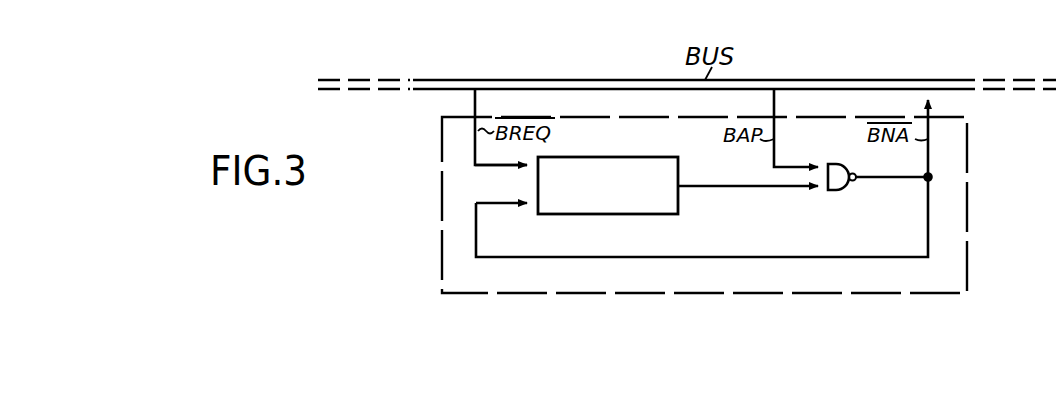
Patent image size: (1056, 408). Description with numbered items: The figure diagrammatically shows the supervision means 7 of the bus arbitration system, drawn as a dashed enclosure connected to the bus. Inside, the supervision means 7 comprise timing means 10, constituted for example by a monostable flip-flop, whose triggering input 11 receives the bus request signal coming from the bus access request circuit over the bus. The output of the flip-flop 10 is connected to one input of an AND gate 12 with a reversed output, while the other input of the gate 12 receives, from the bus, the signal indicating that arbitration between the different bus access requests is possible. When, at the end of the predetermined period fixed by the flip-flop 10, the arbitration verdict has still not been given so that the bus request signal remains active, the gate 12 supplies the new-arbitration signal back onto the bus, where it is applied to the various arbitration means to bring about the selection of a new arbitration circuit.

The supervision means 7 is at (442, 210).
The timing means 10 is at (608, 185).
The triggering input 11 is at (529, 168).
The AND gate with a reversed output 12 is at (836, 194).